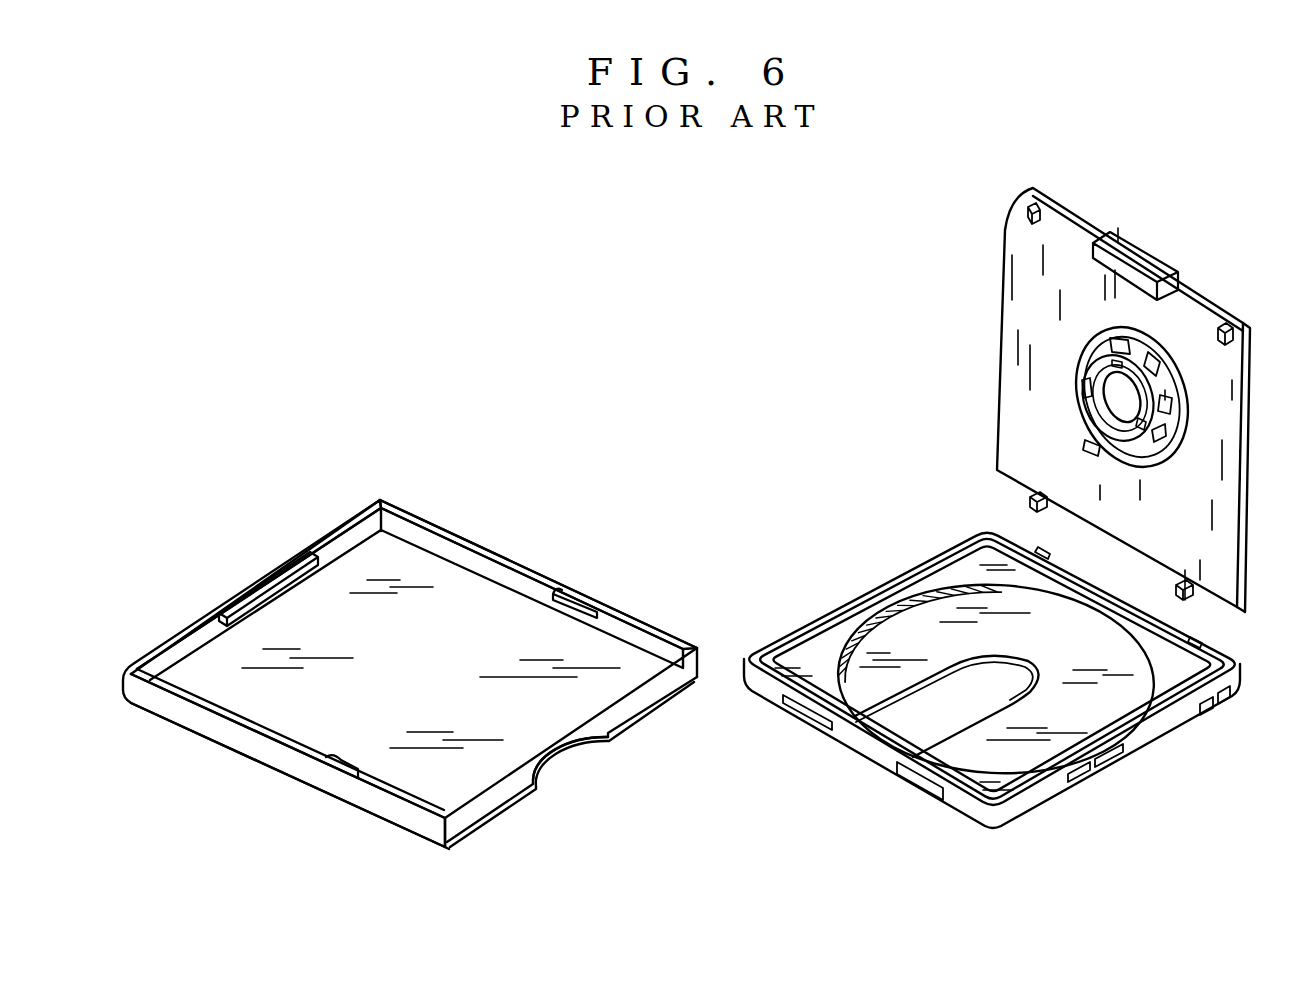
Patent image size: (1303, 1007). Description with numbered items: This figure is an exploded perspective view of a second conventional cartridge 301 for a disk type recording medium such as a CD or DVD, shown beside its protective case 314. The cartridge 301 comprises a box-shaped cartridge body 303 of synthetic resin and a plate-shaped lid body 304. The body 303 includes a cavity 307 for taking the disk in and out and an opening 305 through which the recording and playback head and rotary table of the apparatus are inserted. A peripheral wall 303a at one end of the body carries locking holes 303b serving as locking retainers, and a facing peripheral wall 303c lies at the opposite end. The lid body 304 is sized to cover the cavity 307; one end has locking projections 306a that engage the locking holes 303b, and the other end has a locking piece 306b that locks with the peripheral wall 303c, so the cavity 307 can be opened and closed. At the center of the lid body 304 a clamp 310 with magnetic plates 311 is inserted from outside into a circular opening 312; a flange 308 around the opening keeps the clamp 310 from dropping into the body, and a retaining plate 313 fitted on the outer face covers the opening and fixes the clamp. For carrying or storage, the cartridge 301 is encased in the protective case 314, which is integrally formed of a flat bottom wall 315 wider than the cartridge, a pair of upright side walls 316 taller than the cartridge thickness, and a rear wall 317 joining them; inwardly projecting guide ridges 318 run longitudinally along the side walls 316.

The cartridge 301 is at (878, 410).
The cartridge body 303 is at (1011, 669).
The peripheral wall 303a is at (1252, 665).
The locking holes 303b is at (1040, 552).
The peripheral wall 303c is at (897, 780).
The lid body 304 is at (1001, 298).
The opening 305 is at (933, 720).
The locking projections 306a is at (1043, 512).
The locking piece 306b is at (1185, 230).
The cavity 307 is at (1170, 743).
The flange 308 is at (1153, 377).
The clamp 310 is at (1170, 437).
The magnetic plates 311 is at (1092, 422).
The circular opening 312 is at (1160, 380).
The retaining plate 313 is at (1183, 392).
The protective case 314 is at (415, 671).
The bottom wall 315 is at (507, 771).
The side walls 316 is at (652, 625).
The rear wall 317 is at (330, 527).
The guide ridges 318 is at (571, 603).